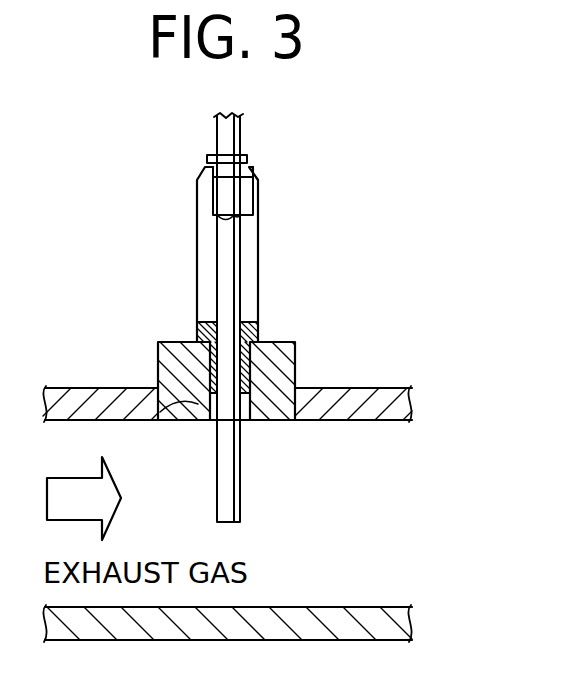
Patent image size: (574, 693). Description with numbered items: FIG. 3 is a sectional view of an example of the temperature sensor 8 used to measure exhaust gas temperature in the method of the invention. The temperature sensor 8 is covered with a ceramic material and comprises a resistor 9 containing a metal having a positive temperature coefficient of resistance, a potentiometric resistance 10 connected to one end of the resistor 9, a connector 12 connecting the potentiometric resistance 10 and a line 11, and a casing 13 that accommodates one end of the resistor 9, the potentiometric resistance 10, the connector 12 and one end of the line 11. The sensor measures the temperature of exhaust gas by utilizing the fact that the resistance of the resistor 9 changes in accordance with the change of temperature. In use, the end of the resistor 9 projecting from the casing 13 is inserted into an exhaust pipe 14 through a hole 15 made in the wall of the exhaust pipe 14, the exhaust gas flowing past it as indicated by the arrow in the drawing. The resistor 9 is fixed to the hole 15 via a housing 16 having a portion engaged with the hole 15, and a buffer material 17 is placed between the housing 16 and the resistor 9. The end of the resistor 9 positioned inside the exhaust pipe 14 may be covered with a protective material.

The temperature sensor 8 is at (383, 183).
The resistor 9 is at (226, 296).
The potentiometric resistance 10 is at (253, 215).
The line 11 is at (241, 127).
The connector 12 is at (231, 182).
The casing 13 is at (258, 265).
The exhaust pipe 14 is at (413, 395).
The hole 15 is at (176, 398).
The housing 16 is at (153, 353).
The buffer material 17 is at (258, 328).